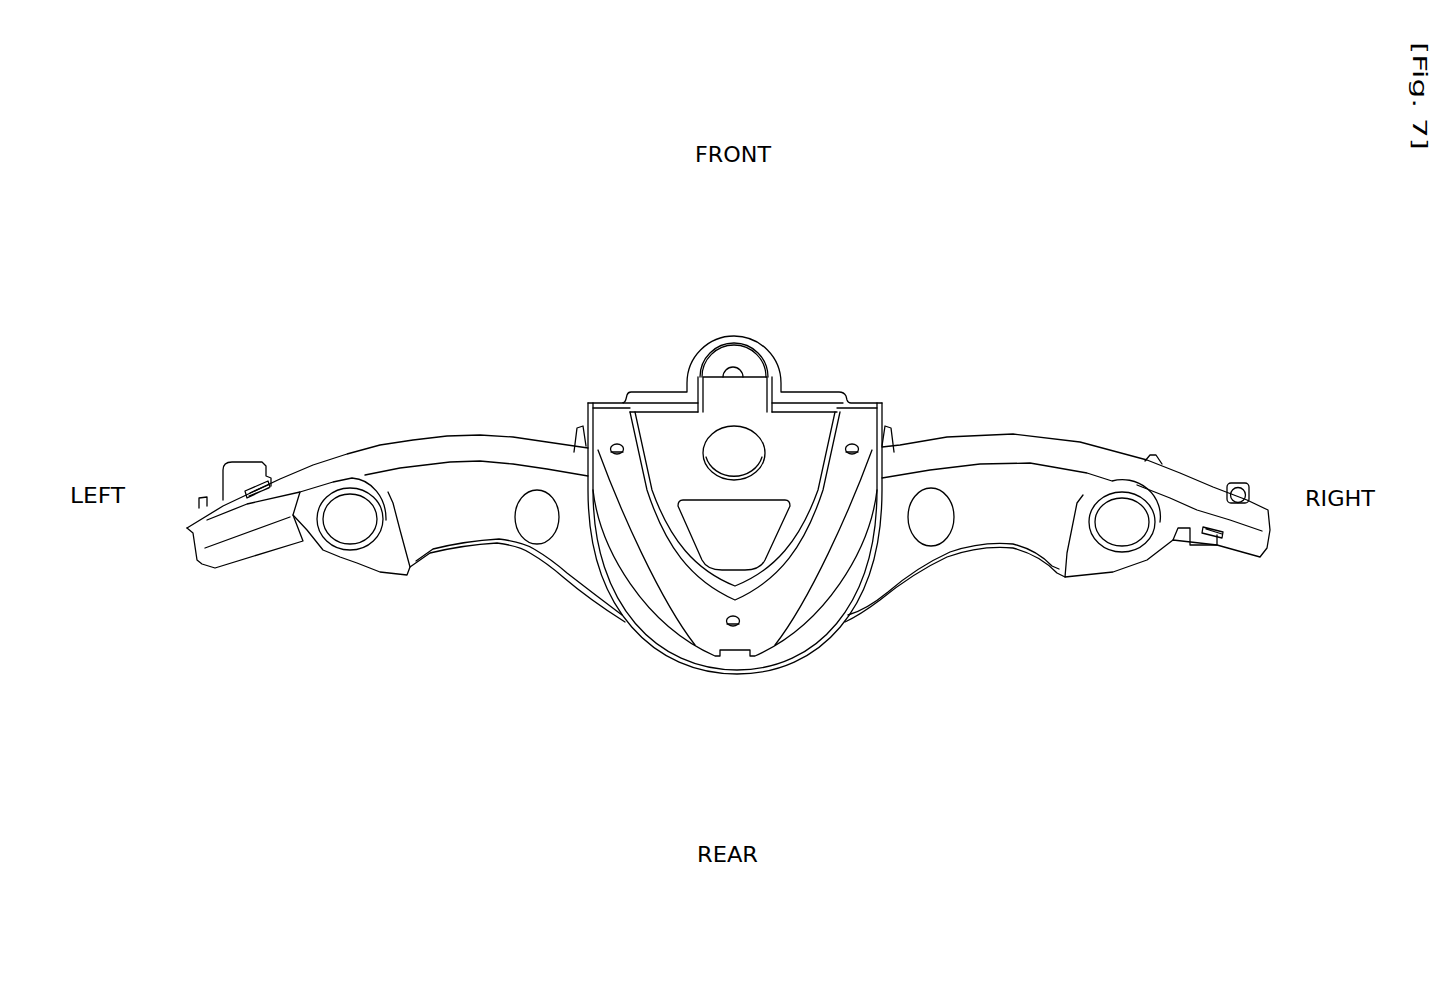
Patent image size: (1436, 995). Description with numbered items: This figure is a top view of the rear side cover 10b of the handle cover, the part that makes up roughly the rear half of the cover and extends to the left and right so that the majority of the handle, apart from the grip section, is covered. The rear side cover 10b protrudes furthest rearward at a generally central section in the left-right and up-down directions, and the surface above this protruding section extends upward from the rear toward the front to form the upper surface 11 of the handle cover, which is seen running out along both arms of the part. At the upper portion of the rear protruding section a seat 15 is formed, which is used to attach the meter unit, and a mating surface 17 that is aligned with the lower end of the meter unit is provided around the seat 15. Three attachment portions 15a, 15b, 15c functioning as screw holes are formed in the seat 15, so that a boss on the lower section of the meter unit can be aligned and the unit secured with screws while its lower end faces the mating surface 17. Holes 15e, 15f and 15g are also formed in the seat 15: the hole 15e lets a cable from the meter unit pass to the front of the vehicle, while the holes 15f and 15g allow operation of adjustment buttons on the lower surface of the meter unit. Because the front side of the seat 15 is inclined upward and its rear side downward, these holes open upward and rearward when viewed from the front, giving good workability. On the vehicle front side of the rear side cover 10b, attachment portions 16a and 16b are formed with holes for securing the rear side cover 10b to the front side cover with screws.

The rear side cover 10b is at (414, 350).
The upper surface 11 is at (471, 445).
The seat 15 is at (810, 394).
The attachment portion 15a is at (615, 442).
The attachment portion 15b is at (727, 622).
The attachment portion 15c is at (853, 443).
The hole 15e is at (624, 512).
The hole 15f is at (727, 373).
The hole 15g is at (702, 460).
The attachment portion 16a is at (542, 535).
The attachment portion 16b is at (930, 535).
The mating surface 17 is at (856, 590).